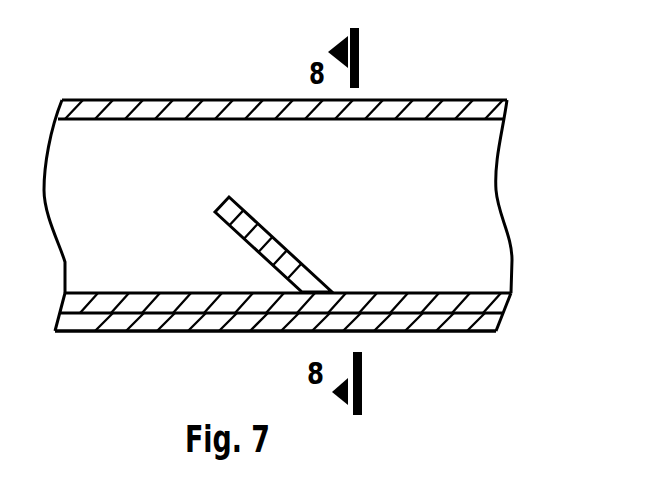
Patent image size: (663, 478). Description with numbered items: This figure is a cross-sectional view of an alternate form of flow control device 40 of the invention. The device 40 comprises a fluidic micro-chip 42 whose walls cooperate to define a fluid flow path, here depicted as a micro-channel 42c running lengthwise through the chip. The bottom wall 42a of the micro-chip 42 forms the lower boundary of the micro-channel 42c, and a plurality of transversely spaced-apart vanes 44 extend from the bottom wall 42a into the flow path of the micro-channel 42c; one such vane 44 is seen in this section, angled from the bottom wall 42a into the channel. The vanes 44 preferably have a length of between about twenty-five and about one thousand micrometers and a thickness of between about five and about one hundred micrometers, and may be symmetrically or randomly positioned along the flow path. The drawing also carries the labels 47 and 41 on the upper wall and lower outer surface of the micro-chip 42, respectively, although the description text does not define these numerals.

The flow control device 40 is at (150, 89).
The upper wall 47 is at (400, 98).
The micro-channel 42c is at (393, 202).
The fluidic micro-chip 42 is at (512, 292).
The bottom wall 42a is at (245, 306).
The outer wall surface 41 is at (122, 343).
The vanes 44 is at (246, 243).